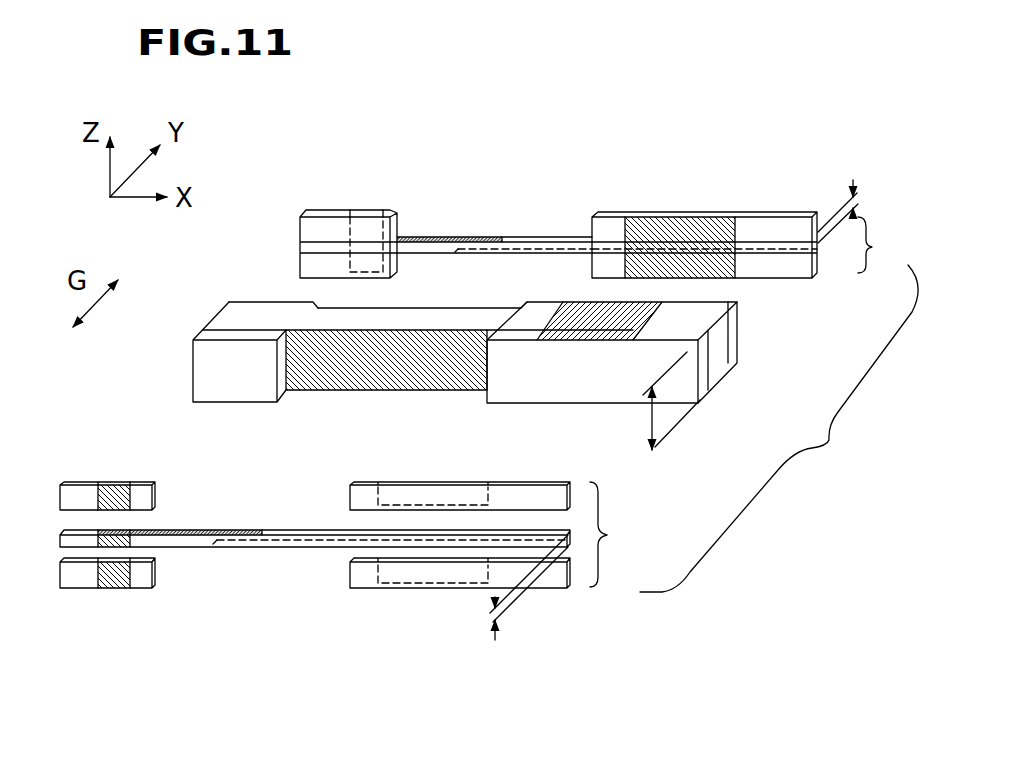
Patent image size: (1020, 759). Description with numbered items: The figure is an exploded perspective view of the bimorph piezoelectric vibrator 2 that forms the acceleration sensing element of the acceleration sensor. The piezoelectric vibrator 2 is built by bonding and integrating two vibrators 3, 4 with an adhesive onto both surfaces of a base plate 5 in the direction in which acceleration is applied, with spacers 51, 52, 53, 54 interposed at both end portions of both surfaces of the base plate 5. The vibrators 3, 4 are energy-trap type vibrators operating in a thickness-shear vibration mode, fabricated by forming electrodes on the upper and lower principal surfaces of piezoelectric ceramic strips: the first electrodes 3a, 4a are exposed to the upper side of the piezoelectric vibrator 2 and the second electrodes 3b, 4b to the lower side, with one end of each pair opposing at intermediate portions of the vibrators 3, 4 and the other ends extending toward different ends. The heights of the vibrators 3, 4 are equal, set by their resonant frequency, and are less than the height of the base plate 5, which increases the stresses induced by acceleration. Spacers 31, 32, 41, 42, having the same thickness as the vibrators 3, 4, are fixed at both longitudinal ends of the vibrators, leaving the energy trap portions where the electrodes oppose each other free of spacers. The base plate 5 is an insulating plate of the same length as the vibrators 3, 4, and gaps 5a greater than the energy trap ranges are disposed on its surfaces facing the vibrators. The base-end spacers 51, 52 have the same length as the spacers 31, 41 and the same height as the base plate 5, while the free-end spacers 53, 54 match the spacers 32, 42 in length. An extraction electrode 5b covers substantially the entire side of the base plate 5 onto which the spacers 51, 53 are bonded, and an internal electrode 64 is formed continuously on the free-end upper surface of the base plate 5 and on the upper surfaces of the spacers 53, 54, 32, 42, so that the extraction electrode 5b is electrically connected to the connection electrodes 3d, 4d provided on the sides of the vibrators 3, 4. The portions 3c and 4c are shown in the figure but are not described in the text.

The piezoelectric vibrator 2 is at (471, 402).
The vibrator 3 is at (331, 544).
The first electrode 3a is at (188, 530).
The second electrode 3b is at (296, 548).
The piezoelectric body portion 3c is at (112, 585).
The connection electrode 3d is at (405, 502).
The spacer 31 is at (75, 492).
The spacer 32 is at (435, 541).
The vibrator 4 is at (572, 238).
The first electrode 4a is at (435, 237).
The second electrode 4b is at (528, 247).
The hidden portion of block 41 4c is at (350, 233).
The connection electrode 4d is at (613, 230).
The spacer 41 is at (322, 220).
The spacer 42 is at (758, 223).
The base plate 5 is at (469, 358).
The gap 5a is at (383, 307).
The extraction electrode 5b is at (388, 382).
The spacer 51 is at (202, 377).
The spacer 52 is at (250, 303).
The spacer 53 is at (542, 390).
The spacer 54 is at (733, 329).
The internal electrode 64 is at (642, 330).